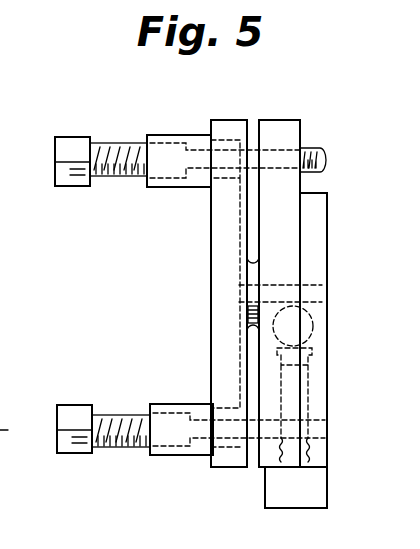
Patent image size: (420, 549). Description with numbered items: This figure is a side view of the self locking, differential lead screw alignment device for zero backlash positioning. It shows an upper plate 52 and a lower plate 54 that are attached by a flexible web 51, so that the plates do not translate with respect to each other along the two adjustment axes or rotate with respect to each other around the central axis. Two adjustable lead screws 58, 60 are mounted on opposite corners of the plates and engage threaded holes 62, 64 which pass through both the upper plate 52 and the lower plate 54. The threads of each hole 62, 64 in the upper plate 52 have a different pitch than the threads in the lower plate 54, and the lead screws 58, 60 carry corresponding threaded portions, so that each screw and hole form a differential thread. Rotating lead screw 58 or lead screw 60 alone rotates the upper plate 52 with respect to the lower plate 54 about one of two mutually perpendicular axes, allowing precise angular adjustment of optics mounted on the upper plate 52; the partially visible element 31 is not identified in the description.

The support member 31 is at (0, 440).
The flexible web 51 is at (250, 317).
The upper plate 52 is at (211, 267).
The lower plate 54 is at (292, 130).
The lead screw 58 is at (72, 186).
The lead screw 60 is at (77, 453).
The threaded hole 62 is at (175, 187).
The threaded hole 64 is at (185, 455).